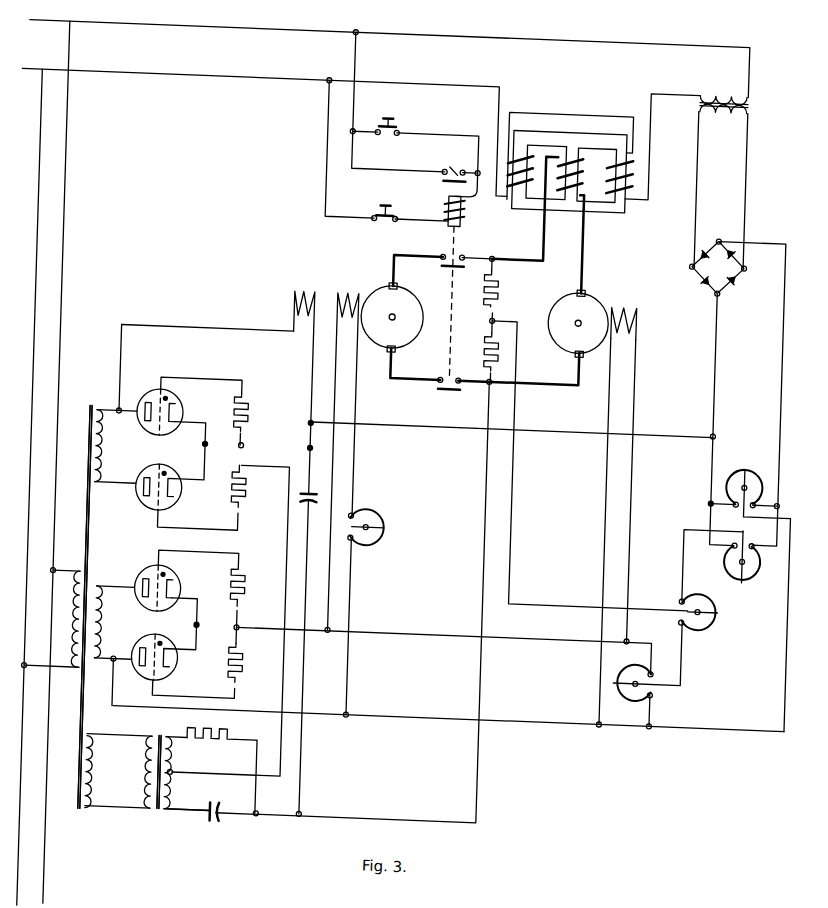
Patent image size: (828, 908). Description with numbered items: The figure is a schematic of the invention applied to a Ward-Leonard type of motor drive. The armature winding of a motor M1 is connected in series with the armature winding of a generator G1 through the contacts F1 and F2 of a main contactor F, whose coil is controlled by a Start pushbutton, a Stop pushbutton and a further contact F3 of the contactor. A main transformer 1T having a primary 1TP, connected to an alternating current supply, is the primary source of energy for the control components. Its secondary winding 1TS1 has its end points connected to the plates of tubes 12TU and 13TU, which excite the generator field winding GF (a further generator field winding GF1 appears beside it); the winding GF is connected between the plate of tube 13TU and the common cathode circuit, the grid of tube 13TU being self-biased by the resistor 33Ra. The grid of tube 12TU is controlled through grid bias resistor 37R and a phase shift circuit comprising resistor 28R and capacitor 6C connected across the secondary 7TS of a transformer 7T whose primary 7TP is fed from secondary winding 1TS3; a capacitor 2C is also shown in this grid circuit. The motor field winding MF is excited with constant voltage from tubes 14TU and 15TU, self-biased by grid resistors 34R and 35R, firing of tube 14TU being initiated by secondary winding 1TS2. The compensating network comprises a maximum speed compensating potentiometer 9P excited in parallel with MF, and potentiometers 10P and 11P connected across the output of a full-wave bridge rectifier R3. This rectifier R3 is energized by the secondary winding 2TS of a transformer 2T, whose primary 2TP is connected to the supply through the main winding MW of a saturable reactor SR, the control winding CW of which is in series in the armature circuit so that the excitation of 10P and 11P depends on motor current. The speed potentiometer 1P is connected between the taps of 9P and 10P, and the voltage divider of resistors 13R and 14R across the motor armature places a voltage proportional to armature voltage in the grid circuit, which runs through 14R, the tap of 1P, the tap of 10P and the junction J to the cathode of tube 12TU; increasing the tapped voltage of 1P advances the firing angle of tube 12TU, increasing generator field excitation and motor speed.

The start pushbutton Start is at (386, 117).
The stop pushbutton Stop is at (386, 204).
The relay F contact F3 is at (454, 164).
The main contactor F is at (458, 222).
The contact F2 is at (458, 271).
The contact F1 is at (449, 392).
The resistor 13R is at (496, 286).
The resistor 14R is at (482, 358).
The generator G1 is at (404, 302).
The motor M1 is at (548, 304).
The motor field winding MF is at (624, 312).
The generator field winding GF is at (303, 302).
The generator field winding GF1 is at (346, 304).
The saturable reactor SR is at (596, 226).
The main winding MW is at (501, 200).
The control winding CW is at (566, 196).
The primary winding 2TP is at (724, 91).
The transformer 2T is at (762, 103).
The secondary winding 2TS is at (723, 122).
The full-wave bridge type rectifier R3 is at (732, 270).
The junction J is at (710, 422).
The potentiometer 11P is at (753, 466).
The potentiometer 10P is at (728, 558).
The speed potentiometer 1P is at (719, 594).
The maximum speed compensating potentiometer 9P is at (642, 694).
The capacitor 2C is at (303, 501).
The resistor 33Ra is at (248, 420).
The grid bias resistor 37R is at (247, 500).
The grid resistor 34R is at (249, 592).
The grid resistor 35R is at (249, 666).
The tube 13TU is at (143, 436).
The tube 12TU is at (146, 486).
The tube 14TU is at (146, 612).
The tube 15TU is at (146, 658).
The secondary winding 1TS1 is at (98, 500).
The secondary winding 1TS2 is at (115, 613).
The primary winding 1TP is at (65, 608).
The main transformer 1T is at (63, 705).
The secondary winding 1TS3 is at (99, 824).
The transformer 7T primary winding 7TP is at (157, 770).
The transformer 7T is at (163, 843).
The transformer 7T secondary winding 7TS is at (178, 766).
The resistor 28R is at (222, 737).
The capacitor 6C is at (228, 832).